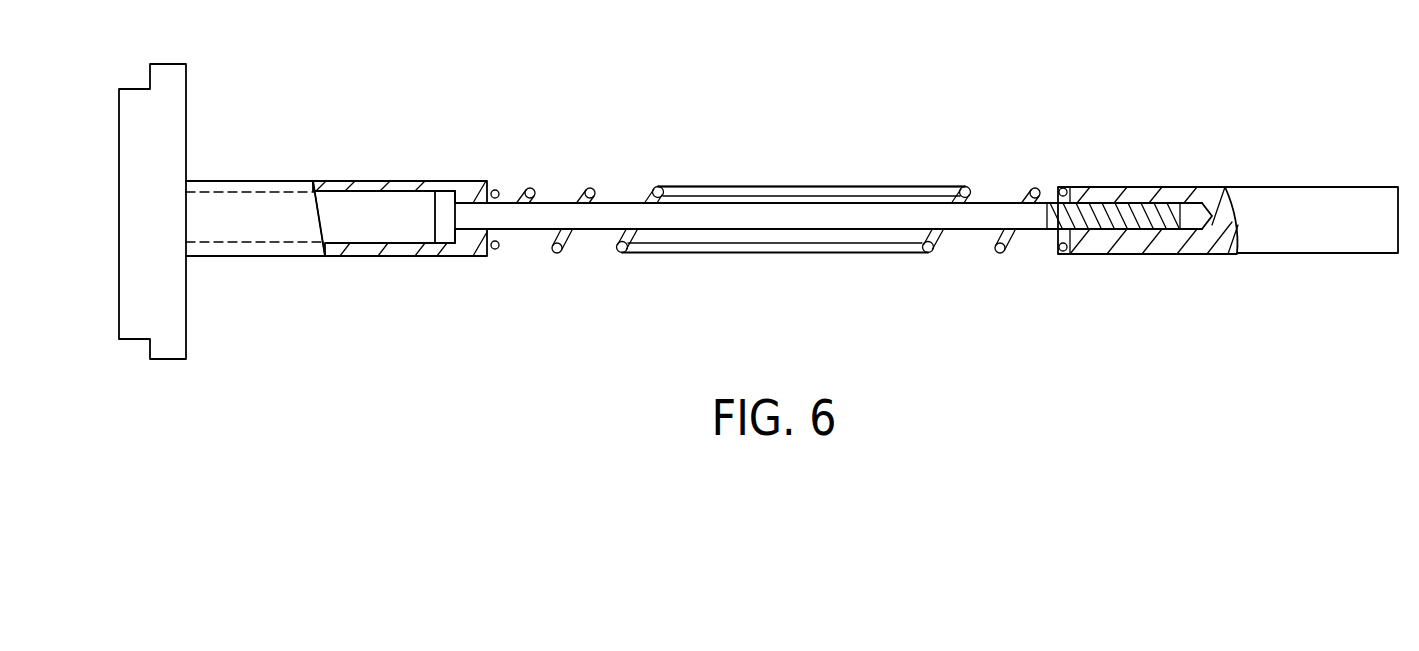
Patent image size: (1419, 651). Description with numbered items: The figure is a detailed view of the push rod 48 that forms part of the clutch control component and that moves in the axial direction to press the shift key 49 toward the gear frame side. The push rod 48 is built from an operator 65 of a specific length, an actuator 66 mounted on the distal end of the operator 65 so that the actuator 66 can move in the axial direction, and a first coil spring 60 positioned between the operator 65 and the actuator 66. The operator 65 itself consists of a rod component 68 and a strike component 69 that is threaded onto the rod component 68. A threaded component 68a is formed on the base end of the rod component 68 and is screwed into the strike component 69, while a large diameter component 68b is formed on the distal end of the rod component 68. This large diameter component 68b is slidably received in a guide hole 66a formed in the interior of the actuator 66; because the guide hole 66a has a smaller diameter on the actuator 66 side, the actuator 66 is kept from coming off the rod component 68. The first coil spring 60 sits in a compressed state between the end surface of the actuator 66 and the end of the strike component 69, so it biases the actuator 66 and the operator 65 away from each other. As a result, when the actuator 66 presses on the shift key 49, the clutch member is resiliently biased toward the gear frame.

The push rod 48 is at (950, 168).
The shift key 49 is at (168, 130).
The first coil spring 60 is at (591, 190).
The operator 65 is at (1131, 266).
The actuator 66 is at (447, 257).
The guide hole 66a is at (336, 190).
The rod component 68 is at (855, 228).
The threaded component 68a is at (1137, 207).
The large diameter component 68b is at (447, 200).
The strike component 69 is at (1207, 255).